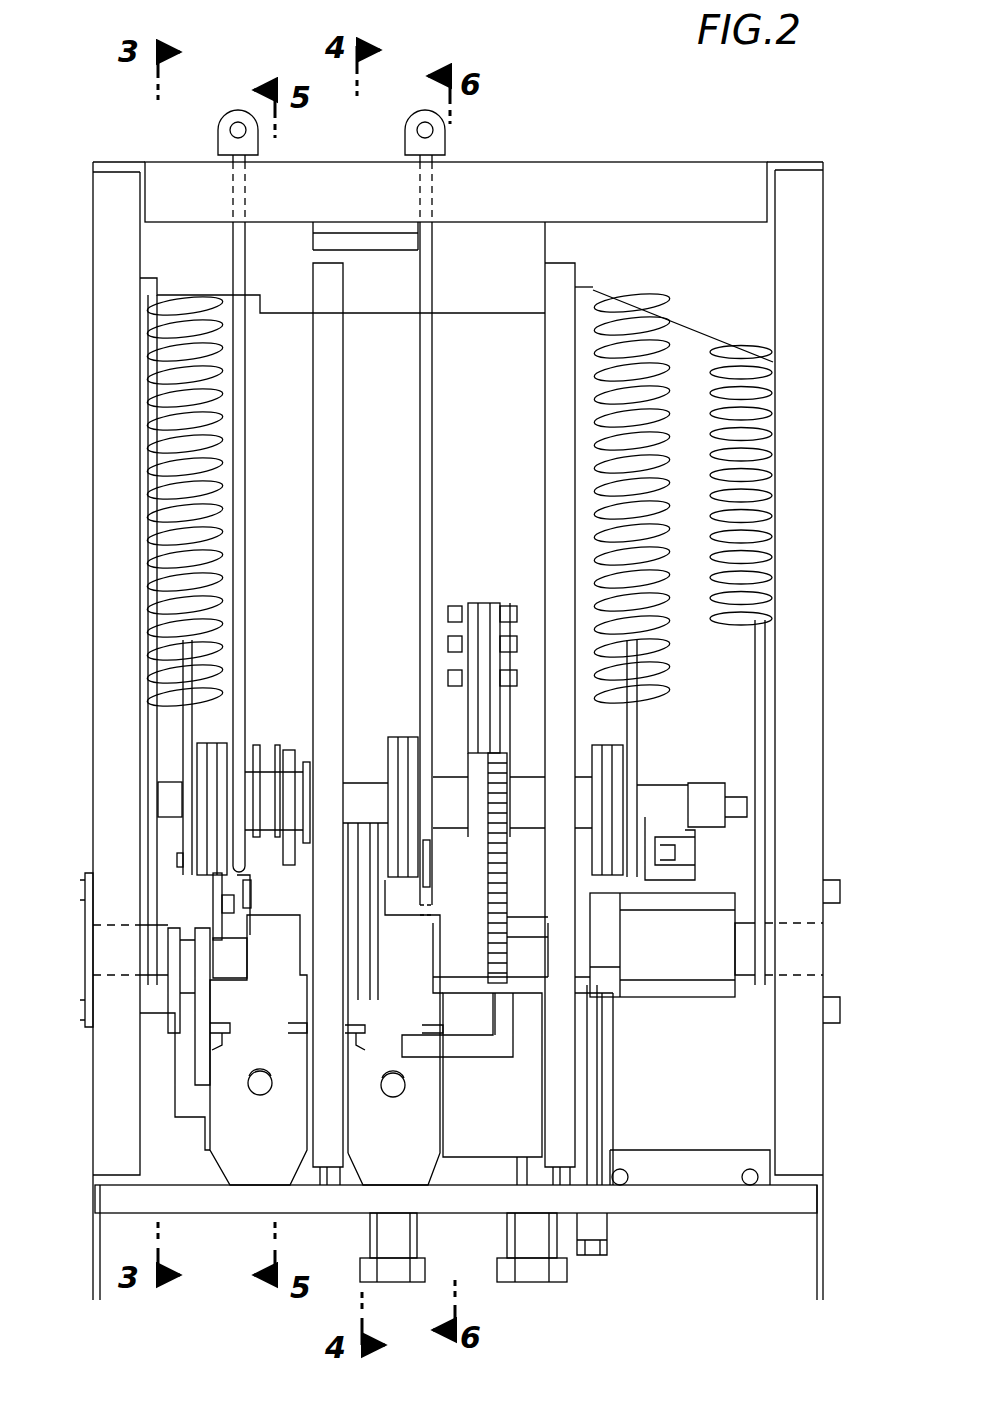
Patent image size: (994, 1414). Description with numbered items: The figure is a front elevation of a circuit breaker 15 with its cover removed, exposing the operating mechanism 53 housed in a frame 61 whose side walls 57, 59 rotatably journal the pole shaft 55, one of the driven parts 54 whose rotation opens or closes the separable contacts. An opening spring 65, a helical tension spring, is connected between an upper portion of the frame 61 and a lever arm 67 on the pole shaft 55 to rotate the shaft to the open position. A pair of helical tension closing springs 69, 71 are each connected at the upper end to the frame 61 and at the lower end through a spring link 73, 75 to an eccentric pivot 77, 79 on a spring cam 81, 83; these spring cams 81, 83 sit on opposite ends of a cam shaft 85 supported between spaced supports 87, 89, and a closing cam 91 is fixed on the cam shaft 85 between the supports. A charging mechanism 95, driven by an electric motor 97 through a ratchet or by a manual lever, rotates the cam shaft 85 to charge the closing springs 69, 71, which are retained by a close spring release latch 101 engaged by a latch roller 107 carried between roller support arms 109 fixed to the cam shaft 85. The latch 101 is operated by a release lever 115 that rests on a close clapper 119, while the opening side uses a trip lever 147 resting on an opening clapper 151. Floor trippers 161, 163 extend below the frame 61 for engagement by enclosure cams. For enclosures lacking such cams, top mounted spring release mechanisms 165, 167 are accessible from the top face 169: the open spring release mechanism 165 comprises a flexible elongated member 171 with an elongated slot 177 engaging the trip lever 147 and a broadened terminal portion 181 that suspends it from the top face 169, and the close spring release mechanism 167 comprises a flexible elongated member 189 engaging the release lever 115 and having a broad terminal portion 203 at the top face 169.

The circuit breaker 15 is at (578, 132).
The operating mechanism 53 is at (493, 564).
The driven parts 54 is at (130, 808).
The pole shaft 55 is at (745, 967).
The side wall 57 is at (100, 466).
The side wall 59 is at (808, 466).
The frame 61 is at (682, 172).
The opening spring 65 is at (766, 384).
The lever arm 67 is at (758, 740).
The closing spring 69 is at (218, 386).
The closing spring 71 is at (595, 393).
The spring link 73 is at (185, 712).
The spring link 75 is at (633, 725).
The eccentric pivot 77 is at (178, 856).
The eccentric pivot 79 is at (640, 880).
The spring cam 81 is at (207, 757).
The spring cam 83 is at (610, 758).
The cam shaft 85 is at (362, 793).
The support 87 is at (334, 466).
The support 89 is at (556, 466).
The closing cam 91 is at (408, 740).
The charging mechanism 95 is at (530, 598).
The electric motor 97 is at (632, 993).
The close spring release latch 101 is at (262, 873).
The latch roller 107 is at (290, 755).
The roller support arms 109 is at (268, 768).
The release lever 115 is at (253, 912).
The close clapper 119 is at (263, 1170).
The trip lever 147 is at (433, 893).
The opening clapper 151 is at (367, 1170).
The floor tripper 161 is at (395, 1275).
The floor tripper 163 is at (548, 1275).
The top mounted open spring release mechanism 165 is at (480, 122).
The top mounted close spring release mechanism 167 is at (188, 142).
The top face 169 is at (312, 170).
The flexible elongated member 171 is at (425, 549).
The elongated slot 177 is at (429, 868).
The broadened terminal portion 181 is at (436, 136).
The flexible elongated member 189 is at (243, 546).
The broad terminal portion 203 is at (237, 108).